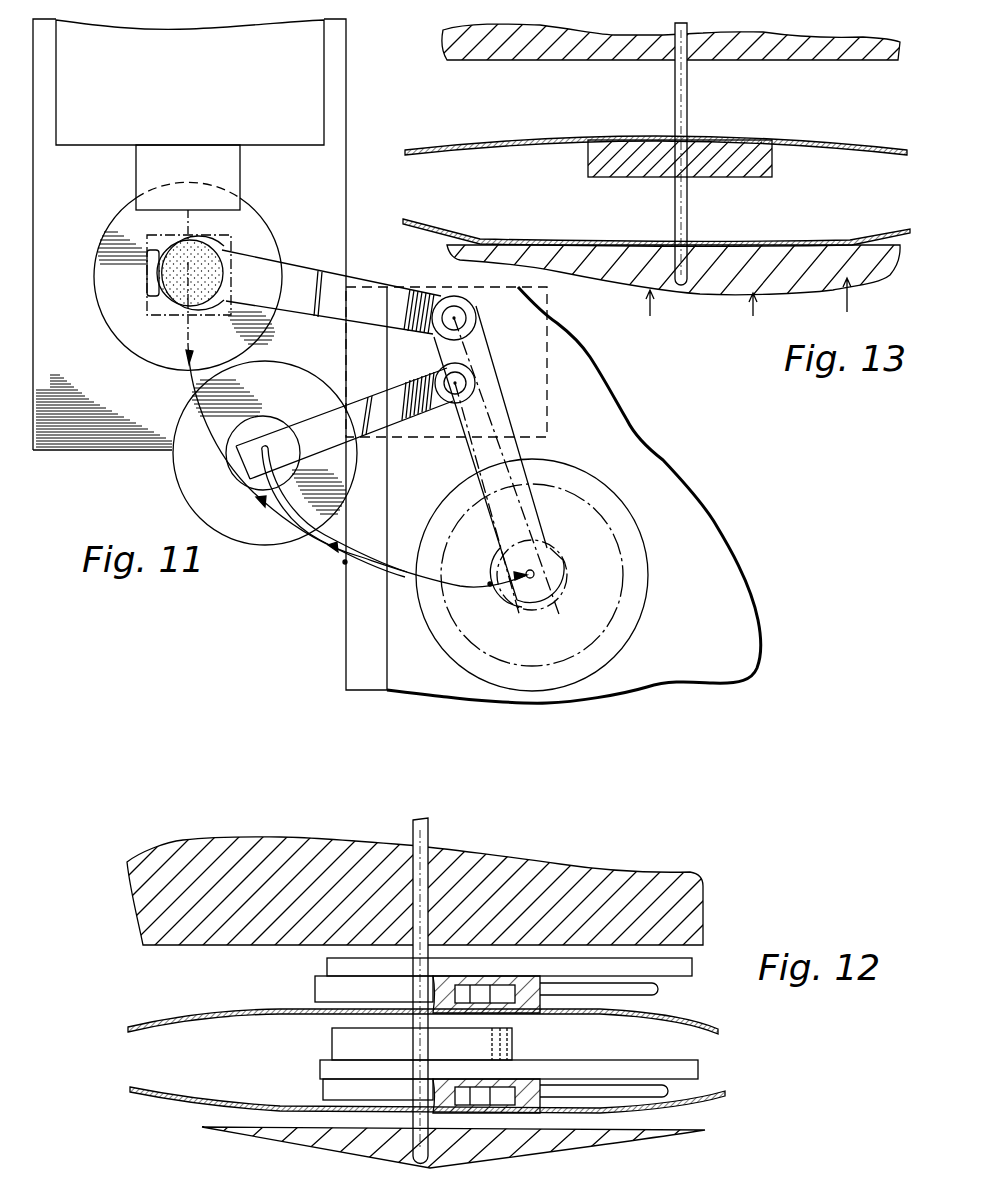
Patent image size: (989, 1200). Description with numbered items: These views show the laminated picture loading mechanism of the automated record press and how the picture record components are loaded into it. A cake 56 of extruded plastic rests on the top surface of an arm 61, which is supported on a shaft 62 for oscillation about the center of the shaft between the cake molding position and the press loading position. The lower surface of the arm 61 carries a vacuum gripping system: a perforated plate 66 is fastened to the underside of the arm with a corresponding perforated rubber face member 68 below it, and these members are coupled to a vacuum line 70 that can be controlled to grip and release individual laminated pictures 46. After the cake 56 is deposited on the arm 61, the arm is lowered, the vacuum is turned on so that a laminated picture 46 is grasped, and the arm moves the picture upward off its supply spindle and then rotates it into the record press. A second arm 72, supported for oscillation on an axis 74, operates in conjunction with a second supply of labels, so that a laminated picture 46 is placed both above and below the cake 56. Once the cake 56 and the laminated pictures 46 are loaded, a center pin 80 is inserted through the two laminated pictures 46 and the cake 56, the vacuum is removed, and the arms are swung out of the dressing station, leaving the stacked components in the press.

In FIG. 13, the laminated pictures 46 is at (445, 147).
In FIG. 12, the laminated pictures 46 is at (180, 1011).
In FIG. 11, the cake 56 is at (222, 254).
In FIG. 13, the cake 56 is at (592, 160).
In FIG. 12, the cake 56 is at (332, 1040).
In FIG. 11, the arm 61 is at (340, 281).
In FIG. 12, the arm 61 is at (644, 1070).
In FIG. 11, the shaft 62 is at (455, 308).
In FIG. 12, the perforated plate 66 is at (326, 1088).
In FIG. 12, the perforated rubber face member 68 is at (370, 1103).
In FIG. 12, the vacuum line 70 is at (668, 1093).
In FIG. 11, the second arm 72 is at (403, 417).
In FIG. 12, the second arm 72 is at (690, 956).
In FIG. 11, the axis 74 is at (464, 383).
In FIG. 13, the center pin 80 is at (676, 112).
In FIG. 12, the center pin 80 is at (430, 848).